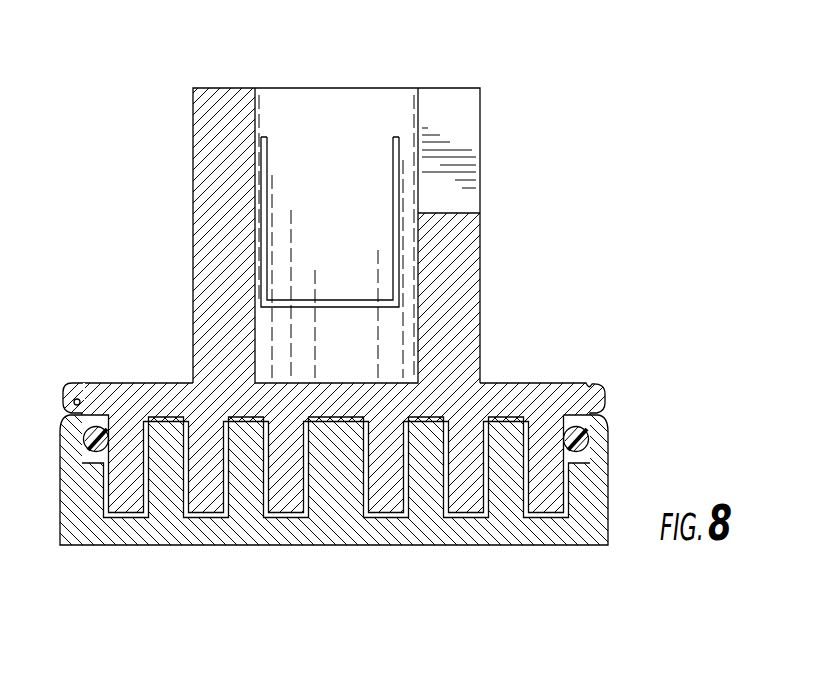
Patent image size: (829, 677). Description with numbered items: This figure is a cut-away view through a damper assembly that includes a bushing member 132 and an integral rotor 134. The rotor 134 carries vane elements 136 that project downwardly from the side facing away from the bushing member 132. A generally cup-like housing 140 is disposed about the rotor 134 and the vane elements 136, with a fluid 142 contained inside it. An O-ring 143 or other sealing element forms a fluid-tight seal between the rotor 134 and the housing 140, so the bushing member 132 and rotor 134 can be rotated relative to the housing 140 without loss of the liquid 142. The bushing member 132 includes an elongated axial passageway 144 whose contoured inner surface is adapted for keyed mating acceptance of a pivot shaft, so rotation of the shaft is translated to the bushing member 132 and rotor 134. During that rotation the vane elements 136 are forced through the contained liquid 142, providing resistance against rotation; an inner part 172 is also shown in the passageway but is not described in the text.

The bushing member 132 is at (190, 112).
The rotor 134 is at (517, 382).
The vane elements 136 is at (127, 493).
The housing 140 is at (540, 546).
The fluid 142 is at (447, 515).
The O-ring 143 is at (590, 447).
The axial passageway 144 is at (327, 105).
The tube 172 is at (278, 232).